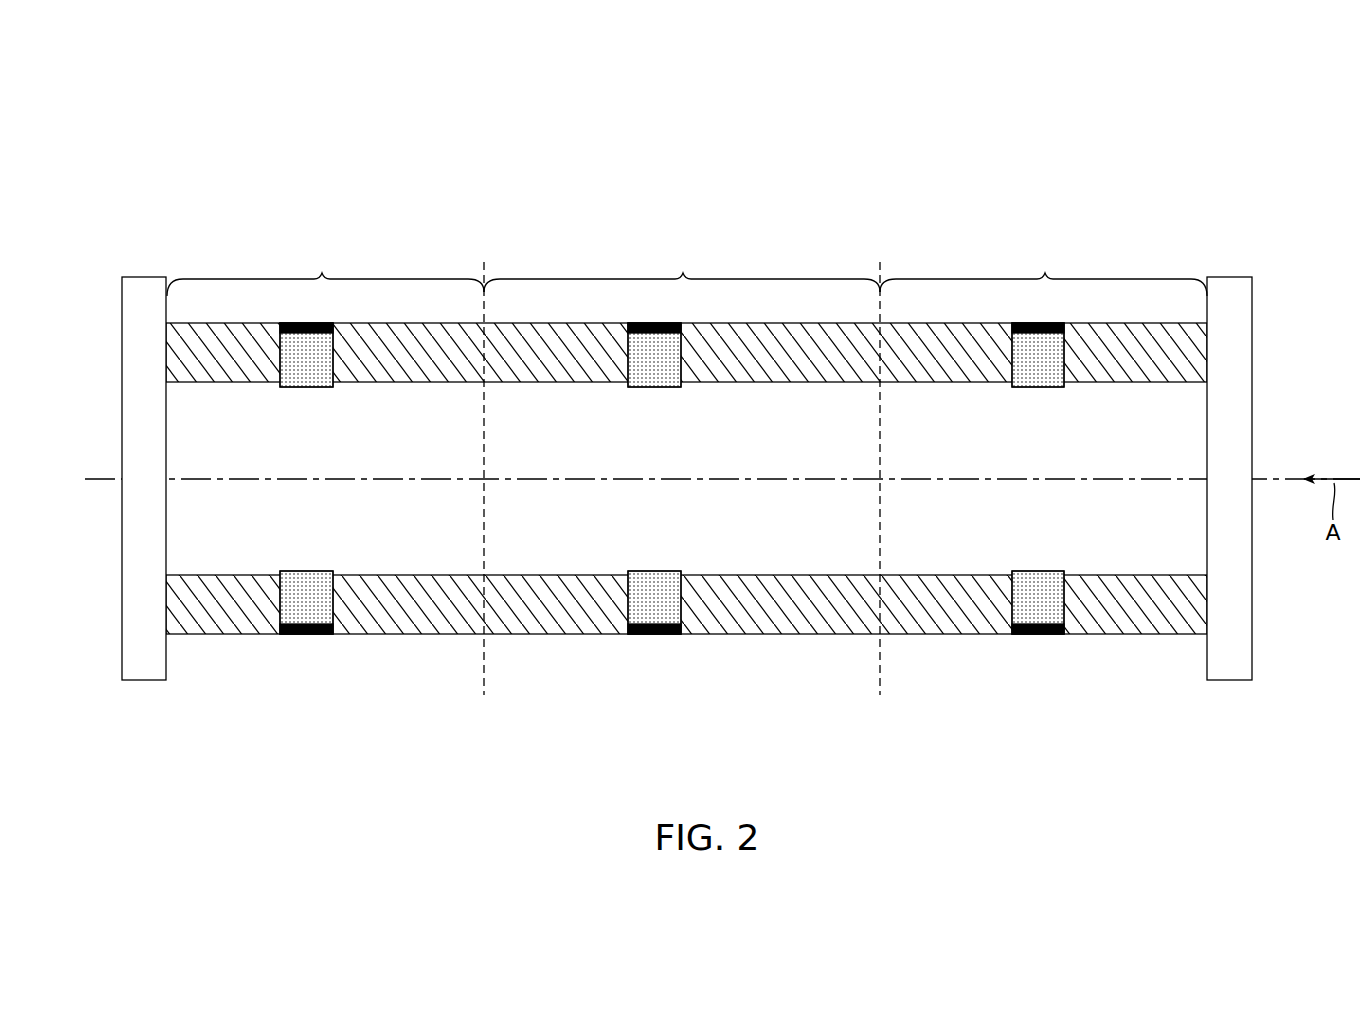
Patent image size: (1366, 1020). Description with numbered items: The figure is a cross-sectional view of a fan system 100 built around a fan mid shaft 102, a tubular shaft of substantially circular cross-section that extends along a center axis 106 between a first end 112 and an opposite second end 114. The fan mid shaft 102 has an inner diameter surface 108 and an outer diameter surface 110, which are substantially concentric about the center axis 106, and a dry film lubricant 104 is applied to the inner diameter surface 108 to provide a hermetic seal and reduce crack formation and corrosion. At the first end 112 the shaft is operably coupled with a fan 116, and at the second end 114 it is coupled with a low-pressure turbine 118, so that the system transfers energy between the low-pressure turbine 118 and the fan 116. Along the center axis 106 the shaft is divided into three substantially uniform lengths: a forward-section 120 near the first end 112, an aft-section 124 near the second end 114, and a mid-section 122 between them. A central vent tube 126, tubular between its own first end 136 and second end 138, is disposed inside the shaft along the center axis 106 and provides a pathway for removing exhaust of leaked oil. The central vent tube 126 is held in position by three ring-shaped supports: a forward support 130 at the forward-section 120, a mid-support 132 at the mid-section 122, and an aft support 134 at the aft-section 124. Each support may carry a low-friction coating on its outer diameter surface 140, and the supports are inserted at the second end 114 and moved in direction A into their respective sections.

The fan system 100 is at (1150, 145).
The fan mid shaft 102 is at (297, 323).
The dry film lubricant 104 is at (900, 382).
The center axis 106 is at (1283, 476).
The inner diameter surface 108 is at (505, 382).
The outer diameter surface 110 is at (436, 323).
The first end 112 is at (167, 607).
The second end 114 is at (1207, 608).
The fan 116 is at (119, 323).
The low-pressure turbine 118 is at (1256, 323).
The forward-section 120 is at (322, 273).
The mid-section 122 is at (683, 273).
The aft-section 124 is at (1045, 273).
The central vent tube 126 is at (808, 445).
The forward support 130 is at (281, 352).
The mid-support 132 is at (628, 352).
The aft support 134 is at (1012, 352).
The first end 136 is at (167, 527).
The second end 138 is at (1207, 558).
The outer diameter surface 140 is at (318, 323).